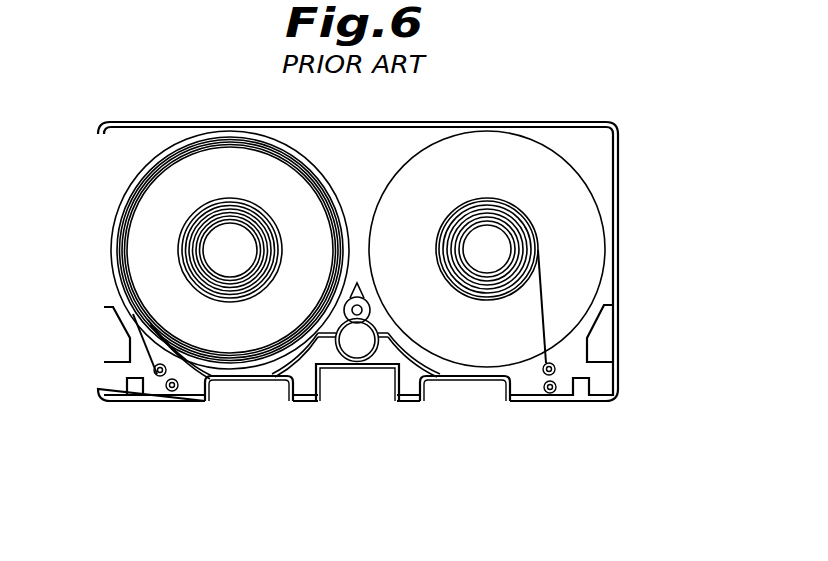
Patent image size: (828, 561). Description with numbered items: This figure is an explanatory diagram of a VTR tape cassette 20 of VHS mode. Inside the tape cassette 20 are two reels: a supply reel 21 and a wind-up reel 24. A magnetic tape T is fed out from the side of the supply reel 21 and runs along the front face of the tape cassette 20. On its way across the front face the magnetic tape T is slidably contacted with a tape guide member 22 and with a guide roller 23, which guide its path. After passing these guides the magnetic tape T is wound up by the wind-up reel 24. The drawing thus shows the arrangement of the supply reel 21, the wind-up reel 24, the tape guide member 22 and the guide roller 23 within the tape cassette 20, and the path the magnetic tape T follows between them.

The tape cassette 20 is at (527, 122).
The supply reel 21 is at (502, 242).
The tape guide member 22 is at (171, 392).
The guide roller 23 is at (158, 380).
The wind-up reel 24 is at (272, 140).
The magnetic tape T is at (545, 289).